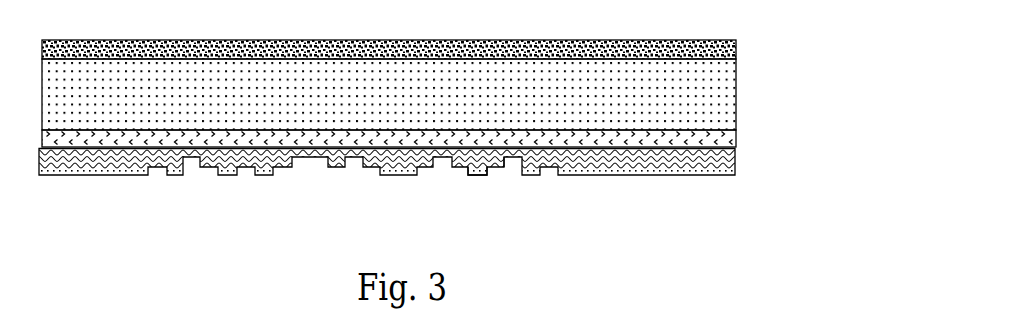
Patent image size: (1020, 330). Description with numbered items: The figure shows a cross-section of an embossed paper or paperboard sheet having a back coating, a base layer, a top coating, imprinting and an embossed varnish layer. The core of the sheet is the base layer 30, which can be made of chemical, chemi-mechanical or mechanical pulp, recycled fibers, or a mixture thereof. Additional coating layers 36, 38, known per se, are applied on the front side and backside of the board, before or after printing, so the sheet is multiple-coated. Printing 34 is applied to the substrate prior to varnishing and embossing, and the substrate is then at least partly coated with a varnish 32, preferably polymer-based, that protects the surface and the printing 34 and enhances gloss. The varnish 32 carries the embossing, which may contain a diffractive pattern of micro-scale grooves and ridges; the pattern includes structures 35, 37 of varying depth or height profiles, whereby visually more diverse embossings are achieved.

The base layer 30 is at (718, 97).
The varnish 32 is at (703, 177).
The printing 34 is at (740, 160).
The structure of varying depth or height profile 35 is at (480, 174).
The additional coating layer 36 is at (731, 142).
The structure of varying depth or height profile 37 is at (503, 162).
The additional coating layer 38 is at (736, 42).